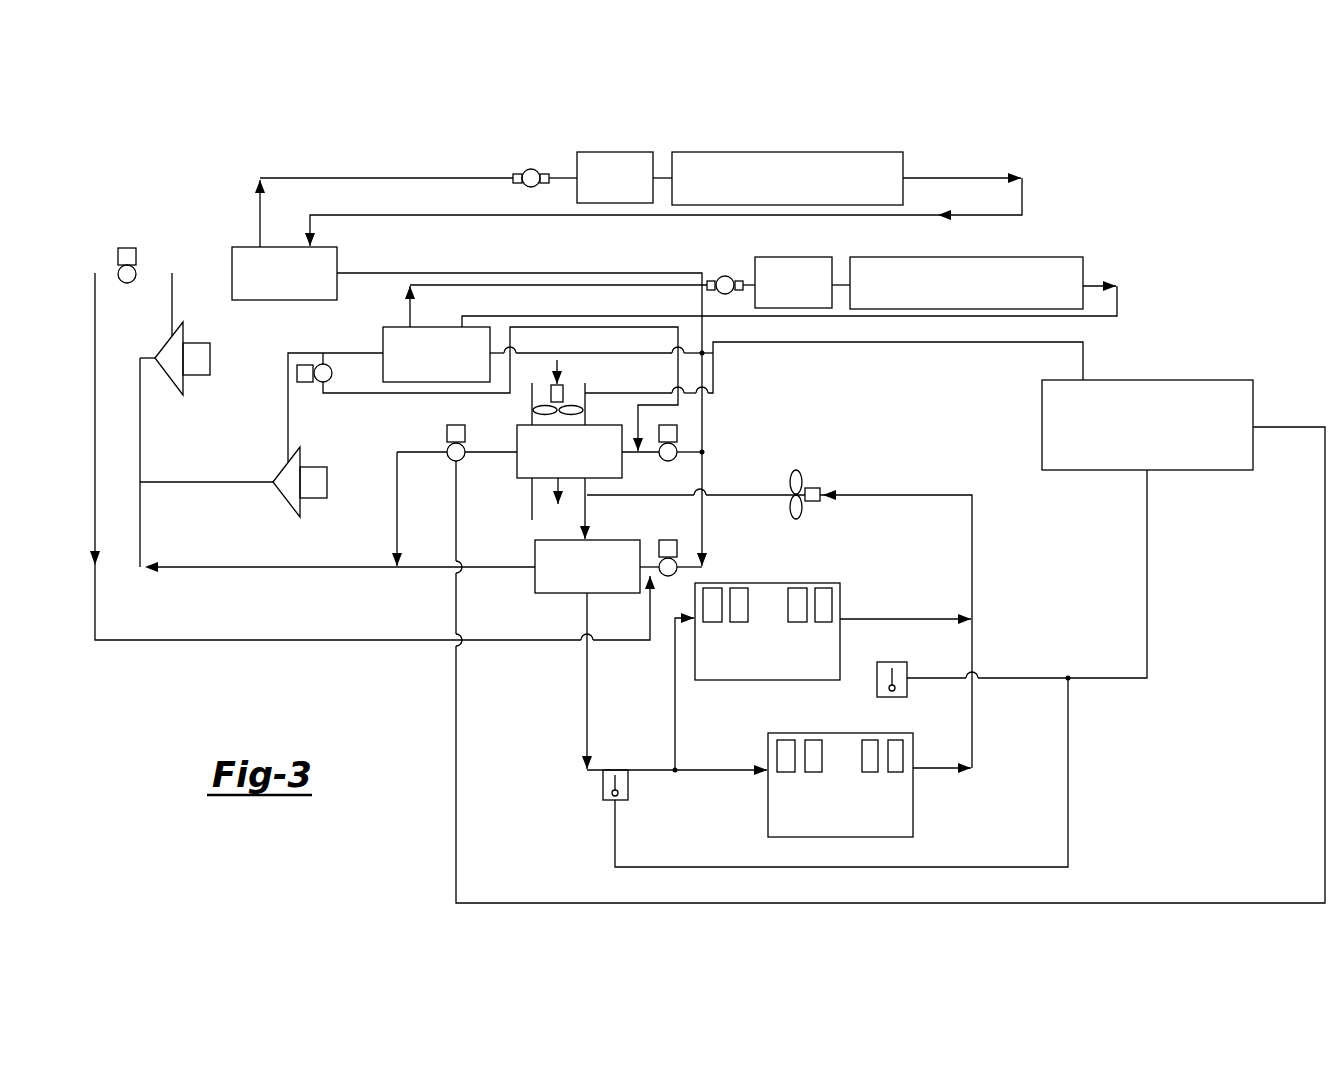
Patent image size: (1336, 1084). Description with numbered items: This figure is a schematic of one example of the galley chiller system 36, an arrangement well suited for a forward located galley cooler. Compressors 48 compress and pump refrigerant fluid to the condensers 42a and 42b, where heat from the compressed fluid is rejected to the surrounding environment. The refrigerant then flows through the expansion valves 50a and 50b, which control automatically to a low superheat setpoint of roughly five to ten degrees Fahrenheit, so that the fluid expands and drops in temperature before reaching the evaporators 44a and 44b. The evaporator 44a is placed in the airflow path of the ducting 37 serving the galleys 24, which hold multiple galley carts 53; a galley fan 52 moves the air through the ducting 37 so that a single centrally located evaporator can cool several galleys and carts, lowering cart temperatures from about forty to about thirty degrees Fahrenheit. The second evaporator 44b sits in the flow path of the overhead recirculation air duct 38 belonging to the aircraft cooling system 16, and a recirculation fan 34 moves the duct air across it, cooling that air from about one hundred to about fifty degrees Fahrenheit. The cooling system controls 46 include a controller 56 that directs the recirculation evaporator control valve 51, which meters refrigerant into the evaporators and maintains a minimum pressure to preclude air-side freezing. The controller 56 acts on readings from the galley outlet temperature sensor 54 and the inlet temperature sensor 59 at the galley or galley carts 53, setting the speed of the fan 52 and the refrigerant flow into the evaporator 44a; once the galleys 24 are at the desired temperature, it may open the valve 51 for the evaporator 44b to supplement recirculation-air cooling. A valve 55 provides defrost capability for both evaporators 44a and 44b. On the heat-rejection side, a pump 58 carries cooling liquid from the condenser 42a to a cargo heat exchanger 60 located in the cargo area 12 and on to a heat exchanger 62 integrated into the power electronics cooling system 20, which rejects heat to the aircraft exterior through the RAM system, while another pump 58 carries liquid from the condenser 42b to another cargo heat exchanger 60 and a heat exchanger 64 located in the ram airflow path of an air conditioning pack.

The cargo area 12 is at (717, 117).
The aircraft cooling system 16 is at (1097, 250).
The power electronics cooling system 20 is at (918, 147).
The galleys 24 is at (913, 808).
The recirculation fan 34 is at (563, 388).
The galley chiller system 36 is at (657, 782).
The ducting 37 is at (530, 403).
The overhead recirculation air duct 38 is at (554, 564).
The condenser 42a is at (265, 301).
The condenser 42b is at (383, 340).
The evaporator 44a is at (545, 600).
The evaporator 44b is at (515, 470).
The cooling system controls 46 is at (920, 447).
The compressors 48 is at (170, 383).
The expansion valve 50a is at (668, 539).
The expansion valve 50b is at (677, 432).
The recirculation evaporator control valve 51 is at (447, 427).
The galley fan 52 is at (812, 488).
The galley carts 53 is at (712, 588).
The temperature sensor 54 is at (900, 662).
The valve 55 is at (126, 249).
The controller 56 is at (1160, 409).
The pump 58 is at (528, 170).
The temperature sensor 59 is at (602, 780).
The cargo heat exchanger 60 is at (594, 151).
The heat exchanger 62 is at (770, 151).
The heat exchanger 64 is at (900, 256).